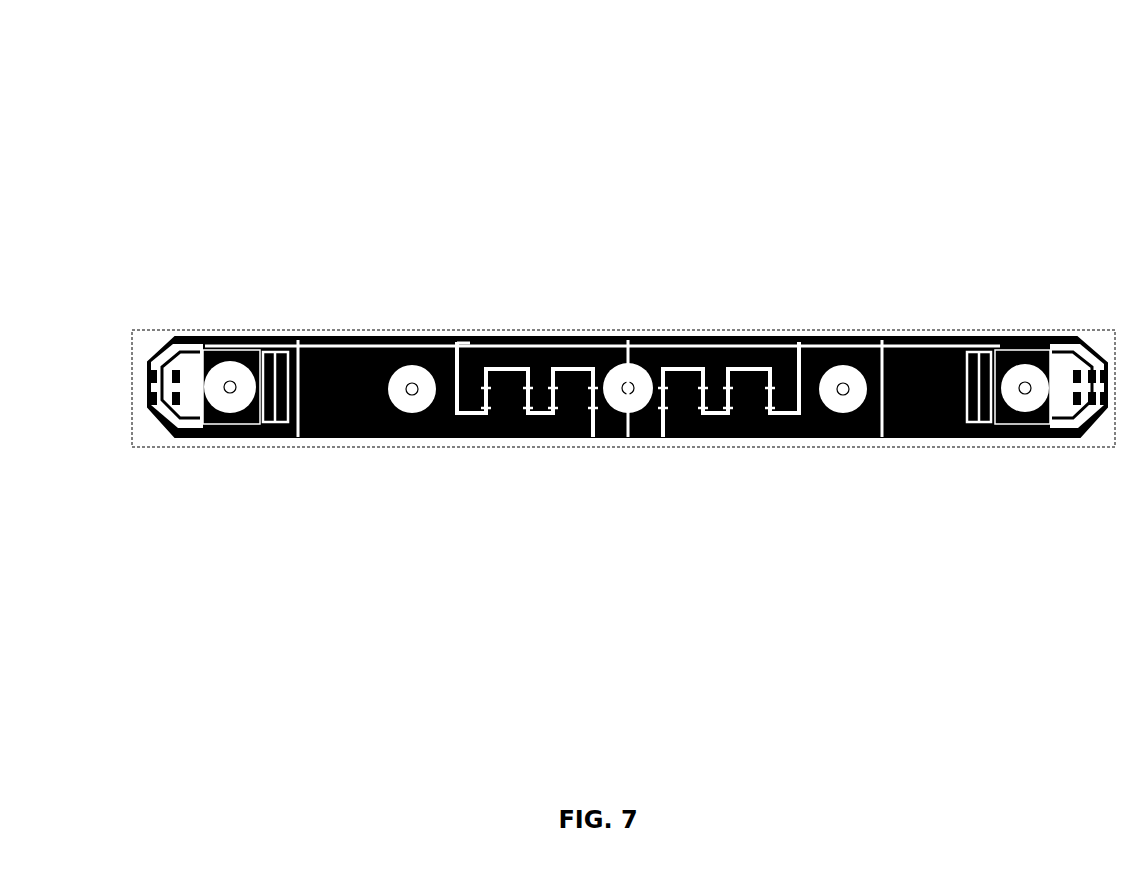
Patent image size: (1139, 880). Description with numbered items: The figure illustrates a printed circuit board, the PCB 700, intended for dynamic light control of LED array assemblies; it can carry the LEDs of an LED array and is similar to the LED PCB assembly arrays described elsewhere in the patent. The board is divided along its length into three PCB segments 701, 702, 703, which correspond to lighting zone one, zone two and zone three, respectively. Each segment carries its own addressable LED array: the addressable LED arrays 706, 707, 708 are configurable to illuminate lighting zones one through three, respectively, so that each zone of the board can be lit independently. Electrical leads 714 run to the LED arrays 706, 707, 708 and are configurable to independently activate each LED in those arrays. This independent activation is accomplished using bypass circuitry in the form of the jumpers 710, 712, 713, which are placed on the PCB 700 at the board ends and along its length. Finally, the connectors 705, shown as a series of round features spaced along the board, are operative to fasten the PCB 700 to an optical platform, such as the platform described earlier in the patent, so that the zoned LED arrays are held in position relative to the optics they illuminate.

The PCB 700 is at (623, 231).
The PCB segment 701 is at (357, 345).
The PCB segment 702 is at (752, 350).
The PCB segment 703 is at (898, 345).
The connectors 705 is at (953, 433).
The addressable LED array 706 is at (272, 350).
The addressable LED array 707 is at (655, 350).
The addressable LED array 708 is at (968, 350).
The jumper 710 is at (198, 346).
The jumper 712 is at (470, 346).
The jumper 713 is at (1052, 347).
The electrical leads 714 is at (1043, 430).